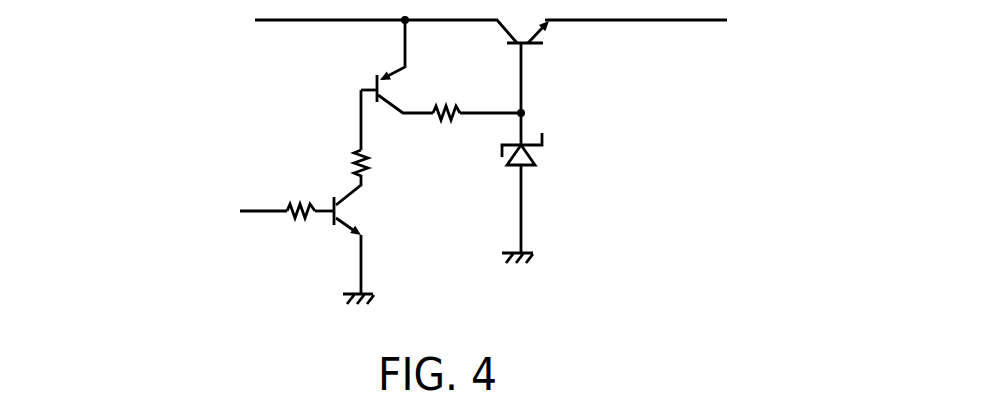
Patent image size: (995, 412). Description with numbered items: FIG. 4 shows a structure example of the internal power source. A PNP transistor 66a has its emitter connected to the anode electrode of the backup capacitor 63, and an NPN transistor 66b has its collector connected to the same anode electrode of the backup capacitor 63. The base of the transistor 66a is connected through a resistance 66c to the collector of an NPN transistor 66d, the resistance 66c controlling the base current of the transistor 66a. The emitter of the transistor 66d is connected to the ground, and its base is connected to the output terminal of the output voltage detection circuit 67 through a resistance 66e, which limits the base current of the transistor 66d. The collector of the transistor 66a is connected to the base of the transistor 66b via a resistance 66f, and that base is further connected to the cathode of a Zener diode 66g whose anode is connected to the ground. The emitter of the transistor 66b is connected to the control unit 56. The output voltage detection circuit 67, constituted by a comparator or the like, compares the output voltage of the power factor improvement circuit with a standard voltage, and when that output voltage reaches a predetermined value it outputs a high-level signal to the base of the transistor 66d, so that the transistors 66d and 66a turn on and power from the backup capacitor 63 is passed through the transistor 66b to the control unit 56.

The PNP transistor 66a is at (373, 79).
The NPN transistor 66b is at (540, 46).
The resistance 66c is at (370, 157).
The NPN transistor 66d is at (342, 225).
The resistance 66e is at (292, 205).
The resistance 66f is at (437, 106).
The Zener diode 66g is at (535, 160).
The backup capacitor 63 is at (146, 26).
The control unit 56 is at (804, 24).
The output voltage detection circuit 67 is at (134, 211).